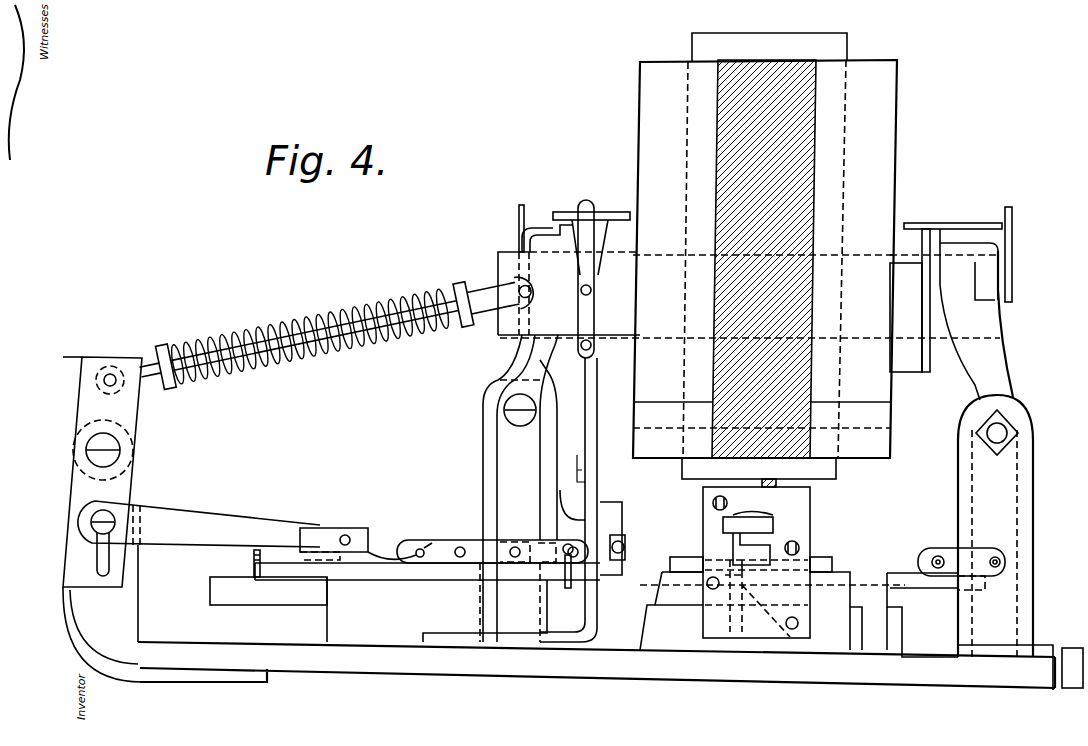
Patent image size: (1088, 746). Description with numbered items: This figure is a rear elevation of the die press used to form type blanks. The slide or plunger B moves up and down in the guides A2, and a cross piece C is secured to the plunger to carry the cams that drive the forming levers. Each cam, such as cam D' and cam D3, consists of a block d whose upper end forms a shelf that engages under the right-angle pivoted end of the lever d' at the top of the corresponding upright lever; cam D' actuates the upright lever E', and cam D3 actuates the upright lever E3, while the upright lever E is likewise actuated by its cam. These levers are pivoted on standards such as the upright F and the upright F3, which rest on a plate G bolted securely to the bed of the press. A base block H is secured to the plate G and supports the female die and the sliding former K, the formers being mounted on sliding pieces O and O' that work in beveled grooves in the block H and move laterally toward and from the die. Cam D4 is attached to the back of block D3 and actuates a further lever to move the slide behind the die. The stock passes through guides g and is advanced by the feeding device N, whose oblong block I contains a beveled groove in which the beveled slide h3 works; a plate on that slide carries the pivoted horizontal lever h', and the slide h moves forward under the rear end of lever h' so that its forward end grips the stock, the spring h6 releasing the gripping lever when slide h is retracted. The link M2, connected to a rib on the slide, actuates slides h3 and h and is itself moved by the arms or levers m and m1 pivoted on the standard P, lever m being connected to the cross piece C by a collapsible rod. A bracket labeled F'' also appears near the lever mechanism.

The plate G is at (562, 664).
The oblong block I is at (452, 625).
The beveled slide h3 is at (288, 606).
The slide h is at (427, 595).
The guides g is at (254, 556).
The standard P is at (142, 467).
The arm or lever m is at (82, 356).
The arm or lever m1 is at (83, 493).
The link M2 is at (243, 508).
The horizontal lever h' is at (348, 522).
The spring h6 is at (421, 548).
The feeding device N is at (492, 534).
The upright or standard F is at (493, 488).
The cross piece C is at (500, 262).
The upright lever E is at (337, 330).
The lever d' is at (782, 225).
The cam D' is at (599, 302).
The upright lever E' is at (578, 500).
The bearing bracket F'' is at (601, 525).
The sliding piece O is at (632, 535).
The guides A2 is at (640, 106).
The slide or plunger B is at (838, 47).
The block d is at (776, 322).
The cam D3 is at (928, 290).
The upright lever E3 is at (990, 348).
The upright or standard F3 is at (1020, 490).
The sliding piece O' is at (956, 552).
The base block H is at (840, 580).
The sliding former K is at (680, 556).
The cam D4 is at (775, 520).